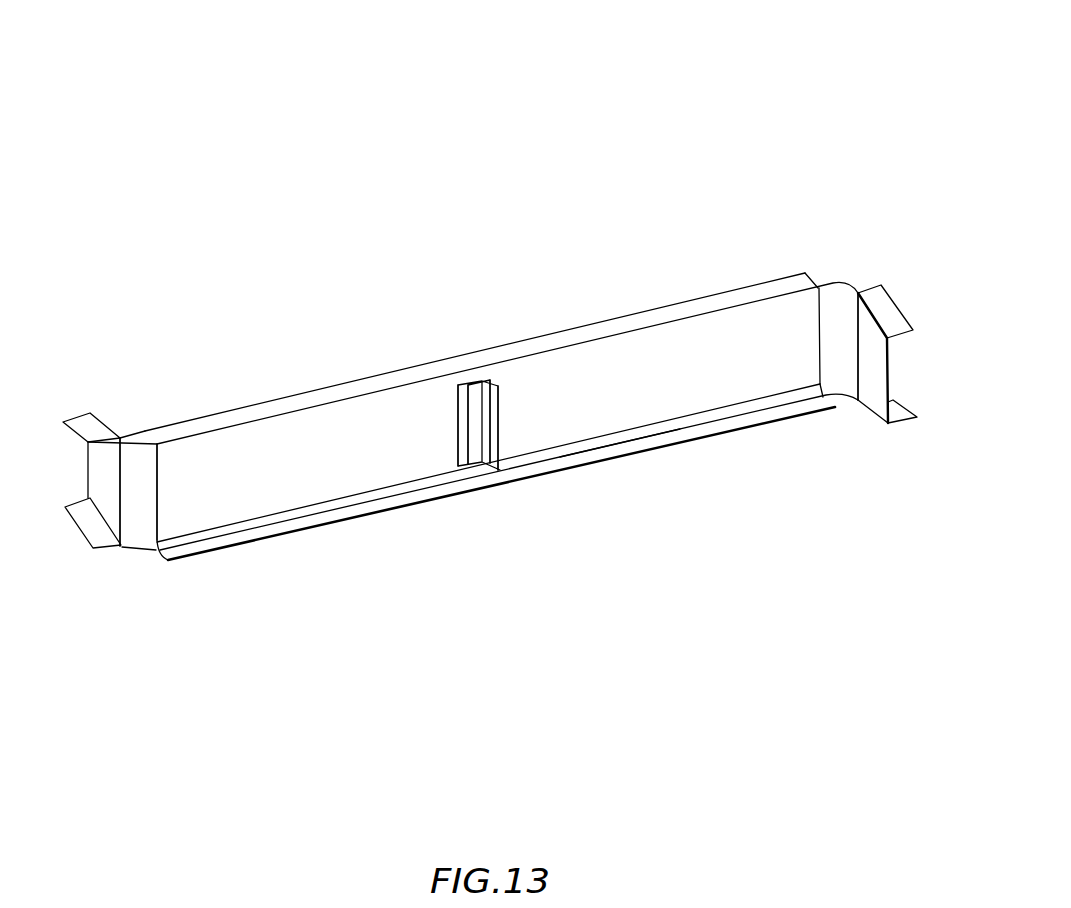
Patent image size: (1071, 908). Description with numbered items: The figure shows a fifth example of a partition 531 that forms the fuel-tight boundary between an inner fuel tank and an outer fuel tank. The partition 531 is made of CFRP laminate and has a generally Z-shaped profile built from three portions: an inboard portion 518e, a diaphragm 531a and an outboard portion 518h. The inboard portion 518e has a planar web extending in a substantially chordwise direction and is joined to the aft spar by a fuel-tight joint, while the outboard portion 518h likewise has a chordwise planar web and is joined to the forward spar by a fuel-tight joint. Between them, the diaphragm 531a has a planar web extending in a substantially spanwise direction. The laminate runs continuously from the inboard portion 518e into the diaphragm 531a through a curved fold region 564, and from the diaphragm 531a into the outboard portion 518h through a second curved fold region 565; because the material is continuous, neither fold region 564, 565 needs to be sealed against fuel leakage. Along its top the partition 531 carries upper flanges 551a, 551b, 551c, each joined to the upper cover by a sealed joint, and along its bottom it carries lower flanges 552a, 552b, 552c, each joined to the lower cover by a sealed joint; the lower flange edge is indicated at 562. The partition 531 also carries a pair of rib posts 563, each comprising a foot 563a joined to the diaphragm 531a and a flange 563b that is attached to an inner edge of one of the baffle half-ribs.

The partition 531 is at (258, 190).
The diaphragm 531a is at (362, 450).
The upper flange 551b is at (578, 333).
The bottom flange 562 is at (243, 533).
The lower flange 552b is at (638, 447).
The rib post 563 is at (448, 413).
The foot 563a is at (475, 448).
The flange 563b is at (498, 468).
The curved fold region 564 is at (138, 538).
The curved fold region 565 is at (831, 305).
The inboard portion 518e is at (103, 470).
The outboard portion 518h is at (875, 398).
The upper flange 551c is at (92, 430).
The lower flange 552c is at (90, 523).
The upper flange 551a is at (880, 310).
The lower flange 552a is at (898, 425).